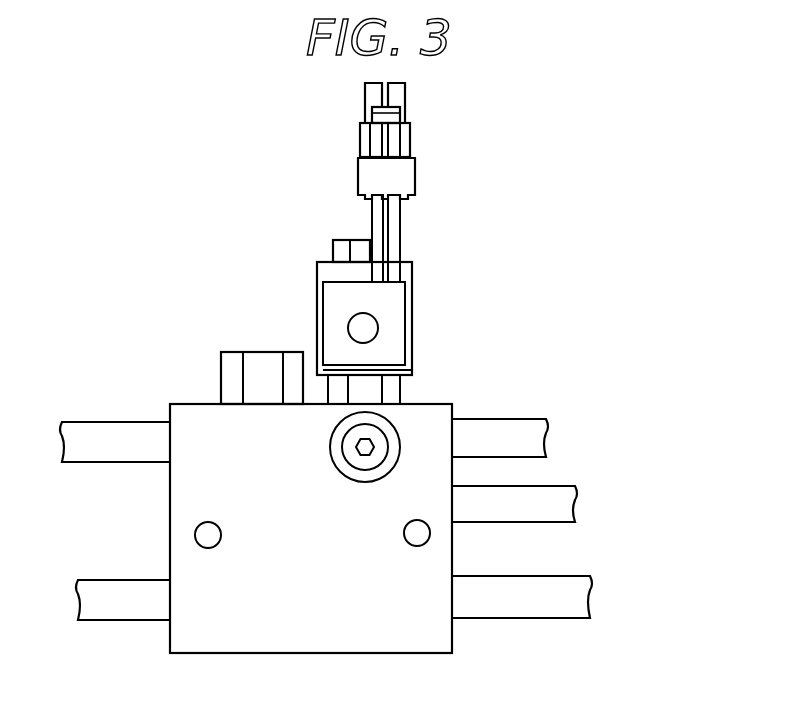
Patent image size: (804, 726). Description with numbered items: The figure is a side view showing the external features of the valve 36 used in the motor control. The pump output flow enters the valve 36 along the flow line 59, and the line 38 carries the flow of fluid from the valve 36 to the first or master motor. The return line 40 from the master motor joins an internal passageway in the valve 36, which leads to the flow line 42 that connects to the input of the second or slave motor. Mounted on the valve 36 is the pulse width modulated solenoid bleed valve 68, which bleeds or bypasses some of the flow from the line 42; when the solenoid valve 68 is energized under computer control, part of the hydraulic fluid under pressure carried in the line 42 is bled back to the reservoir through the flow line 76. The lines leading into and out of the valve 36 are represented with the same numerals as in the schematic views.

The valve 36 is at (218, 653).
The line 38 is at (122, 580).
The return line 40 is at (110, 422).
The flow line 42 is at (487, 418).
The flow line 59 is at (503, 620).
The flow line 76 is at (543, 522).
The pulse width modulated solenoid bleed valve 68 is at (330, 262).